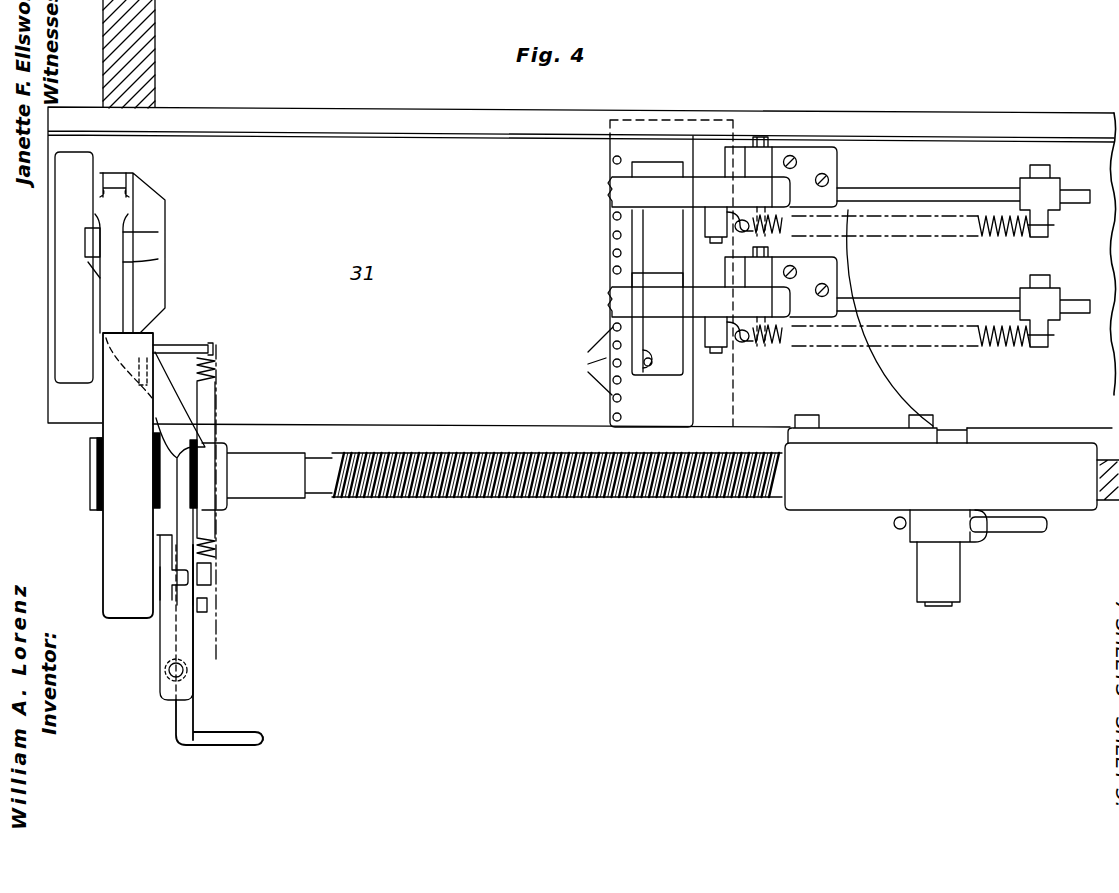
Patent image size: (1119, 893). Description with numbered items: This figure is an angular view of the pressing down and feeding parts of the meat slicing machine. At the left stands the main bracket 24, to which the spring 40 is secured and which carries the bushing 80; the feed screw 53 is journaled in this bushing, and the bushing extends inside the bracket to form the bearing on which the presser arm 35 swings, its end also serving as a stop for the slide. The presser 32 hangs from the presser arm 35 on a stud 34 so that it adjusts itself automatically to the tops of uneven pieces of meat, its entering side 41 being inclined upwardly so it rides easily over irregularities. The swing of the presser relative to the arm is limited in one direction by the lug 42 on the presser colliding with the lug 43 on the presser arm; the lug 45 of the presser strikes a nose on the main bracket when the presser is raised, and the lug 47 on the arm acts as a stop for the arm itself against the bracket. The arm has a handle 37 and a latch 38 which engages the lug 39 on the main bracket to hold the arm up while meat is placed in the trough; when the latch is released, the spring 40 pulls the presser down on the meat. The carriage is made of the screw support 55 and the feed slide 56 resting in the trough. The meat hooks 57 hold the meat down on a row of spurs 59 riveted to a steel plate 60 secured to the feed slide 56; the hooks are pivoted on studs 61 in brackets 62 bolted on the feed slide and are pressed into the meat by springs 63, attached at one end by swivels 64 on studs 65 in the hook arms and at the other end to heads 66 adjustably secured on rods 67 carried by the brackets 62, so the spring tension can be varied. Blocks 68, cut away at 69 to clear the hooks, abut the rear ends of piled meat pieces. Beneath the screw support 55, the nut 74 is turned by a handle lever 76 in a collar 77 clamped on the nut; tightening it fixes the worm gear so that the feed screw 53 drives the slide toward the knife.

The main bracket 24 is at (156, 52).
The presser 32 is at (63, 303).
The stud 34 is at (88, 252).
The presser arm 35 is at (180, 412).
The handle 37 is at (230, 742).
The latch 38 is at (165, 640).
The lug 39 is at (160, 552).
The spring 40 is at (215, 366).
The entering side 41 is at (167, 284).
The lug 42 is at (87, 243).
The lug 43 is at (88, 265).
The lug 45 is at (119, 178).
The lug 47 is at (143, 370).
The feed screw 53 is at (558, 503).
The screw support 55 is at (826, 512).
The feed slide 56 is at (880, 385).
The meat hooks 57 is at (625, 193).
The spurs 59 is at (586, 361).
The steel plate 60 is at (607, 245).
The studs 61 is at (767, 303).
The brackets 62 is at (838, 166).
The springs 63 is at (1007, 235).
The swivels 64 is at (710, 218).
The studs 65 is at (719, 244).
The heads 66 is at (1050, 236).
The rods 67 is at (1075, 205).
The blocks 68 is at (673, 375).
The cut-away 69 is at (636, 169).
The nut 74 is at (915, 592).
The handle lever 76 is at (1022, 532).
The collar 77 is at (920, 532).
The bushing 80 is at (90, 490).